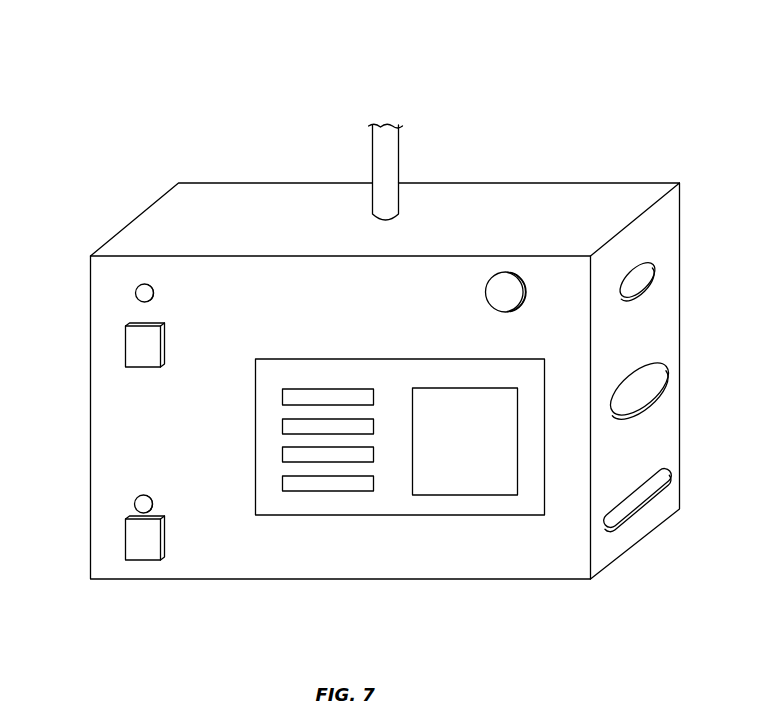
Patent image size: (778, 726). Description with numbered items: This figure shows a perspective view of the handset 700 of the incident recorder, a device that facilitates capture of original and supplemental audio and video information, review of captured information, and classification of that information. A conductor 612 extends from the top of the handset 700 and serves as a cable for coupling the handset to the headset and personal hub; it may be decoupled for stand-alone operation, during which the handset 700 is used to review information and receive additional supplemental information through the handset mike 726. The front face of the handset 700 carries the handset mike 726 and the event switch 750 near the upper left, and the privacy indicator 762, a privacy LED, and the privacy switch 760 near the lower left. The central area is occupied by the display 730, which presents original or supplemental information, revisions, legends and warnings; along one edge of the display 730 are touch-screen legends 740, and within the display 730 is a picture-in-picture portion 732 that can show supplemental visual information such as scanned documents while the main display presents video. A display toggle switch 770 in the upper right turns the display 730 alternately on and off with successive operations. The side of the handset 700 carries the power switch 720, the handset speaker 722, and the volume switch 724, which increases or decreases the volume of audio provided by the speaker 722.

The handset 700 is at (90, 80).
The conductor 612 is at (398, 152).
The display toggle switch 770 is at (522, 272).
The handset mike 726 is at (131, 292).
The event switch 750 is at (122, 355).
The privacy indicator 762 is at (132, 501).
The privacy switch 760 is at (122, 547).
The display 730 is at (450, 513).
The legends 740 is at (377, 475).
The picture-in-picture portion 732 is at (487, 493).
The power switch 720 is at (655, 265).
The handset speaker 722 is at (655, 393).
The volume switch 724 is at (668, 477).